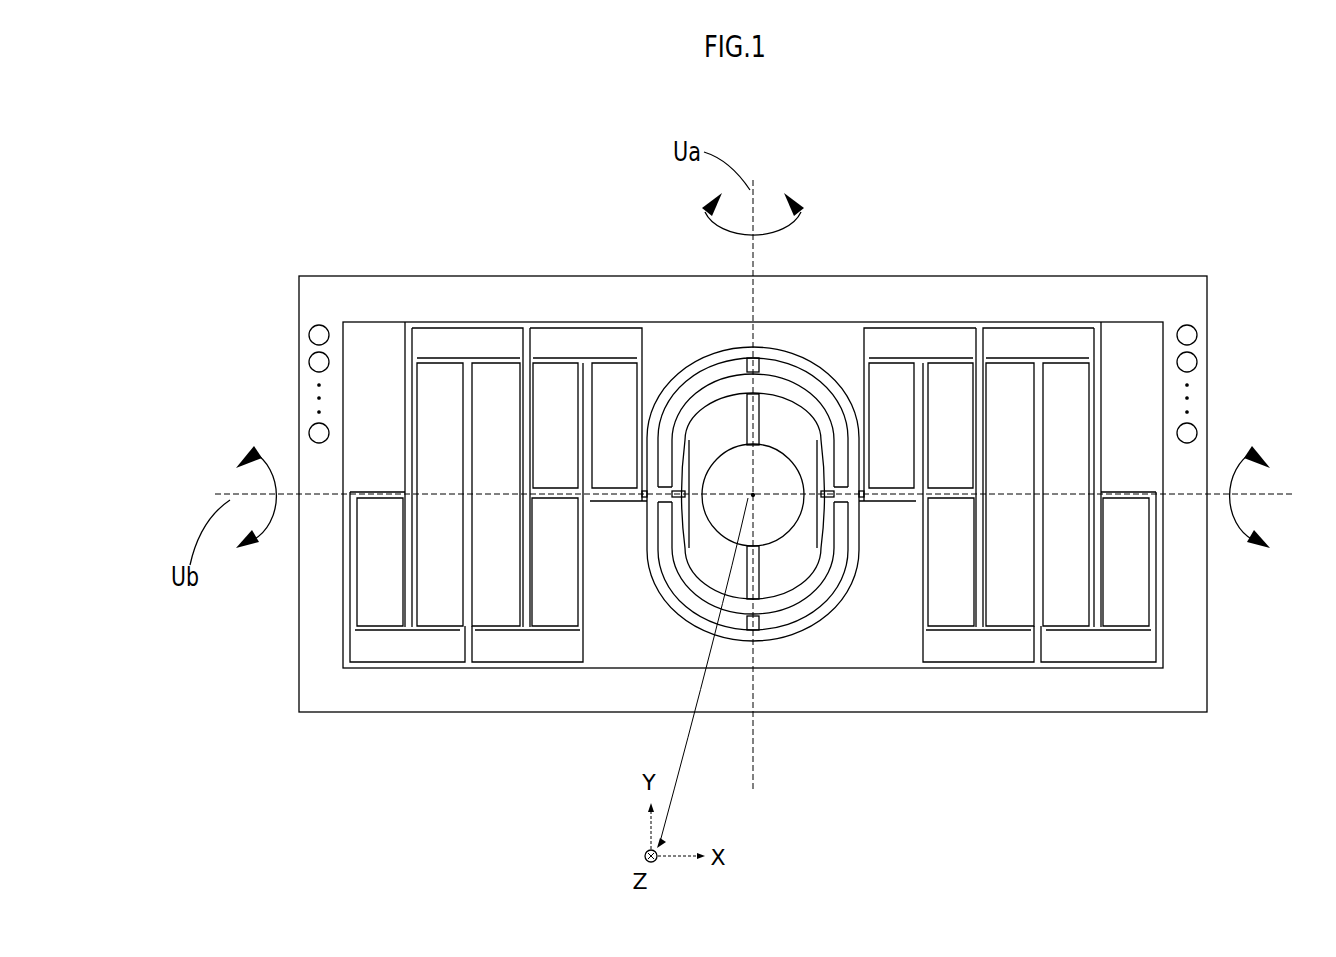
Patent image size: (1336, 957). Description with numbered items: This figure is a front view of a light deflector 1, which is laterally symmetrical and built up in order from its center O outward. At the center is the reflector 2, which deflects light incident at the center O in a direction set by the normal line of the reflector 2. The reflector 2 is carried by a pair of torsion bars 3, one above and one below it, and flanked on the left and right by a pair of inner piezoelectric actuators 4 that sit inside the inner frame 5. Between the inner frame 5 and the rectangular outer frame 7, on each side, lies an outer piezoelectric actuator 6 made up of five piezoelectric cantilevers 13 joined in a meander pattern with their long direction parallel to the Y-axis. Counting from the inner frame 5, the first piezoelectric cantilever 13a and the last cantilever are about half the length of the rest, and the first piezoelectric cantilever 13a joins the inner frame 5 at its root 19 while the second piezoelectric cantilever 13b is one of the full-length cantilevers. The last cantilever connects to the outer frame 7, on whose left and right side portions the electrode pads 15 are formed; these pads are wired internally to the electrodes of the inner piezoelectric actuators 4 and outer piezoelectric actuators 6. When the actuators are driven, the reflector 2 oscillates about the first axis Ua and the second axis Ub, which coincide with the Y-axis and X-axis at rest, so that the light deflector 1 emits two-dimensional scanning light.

The light deflector 1 is at (462, 248).
The reflector 2 is at (722, 475).
The torsion bars 3 is at (762, 425).
The inner piezoelectric actuators 4 is at (693, 580).
The inner frame 5 is at (820, 367).
The outer piezoelectric actuators 6 is at (500, 320).
The outer frame 7 is at (295, 398).
The piezoelectric cantilevers 13 is at (547, 607).
The first piezoelectric cantilever 13a is at (612, 385).
The second piezoelectric cantilever 13b is at (555, 385).
The electrode pads 15 is at (305, 358).
The roots 19 is at (645, 497).